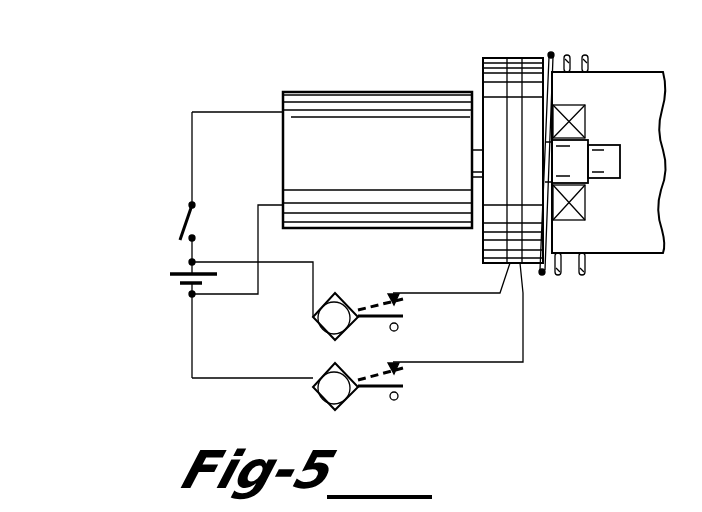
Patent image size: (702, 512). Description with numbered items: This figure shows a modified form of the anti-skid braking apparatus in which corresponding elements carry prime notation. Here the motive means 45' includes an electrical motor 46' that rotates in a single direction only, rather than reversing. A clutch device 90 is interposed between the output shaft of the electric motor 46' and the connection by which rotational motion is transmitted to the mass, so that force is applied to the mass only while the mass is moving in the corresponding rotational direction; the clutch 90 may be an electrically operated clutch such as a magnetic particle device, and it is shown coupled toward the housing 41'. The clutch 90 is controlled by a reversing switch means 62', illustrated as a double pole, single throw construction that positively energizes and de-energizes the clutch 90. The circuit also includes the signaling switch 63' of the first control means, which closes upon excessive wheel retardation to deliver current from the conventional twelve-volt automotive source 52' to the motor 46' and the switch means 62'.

The motive means 45' is at (363, 126).
The electrical motor 46' is at (383, 158).
The clutch device 90 is at (522, 58).
The housing with shaft and bearings 41' is at (605, 150).
The signaling switch 63' is at (136, 233).
The automotive 12 volt source 52' is at (147, 290).
The reversing switch means 62' is at (418, 329).